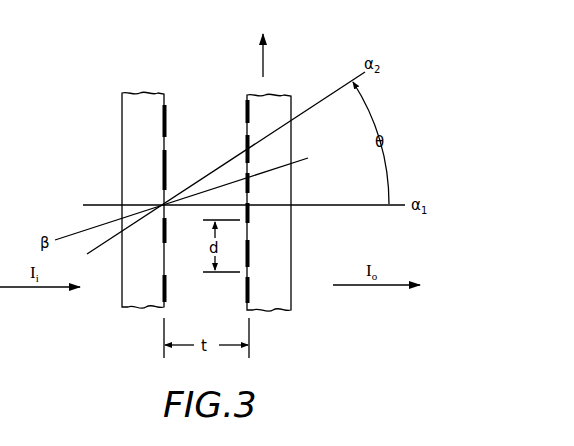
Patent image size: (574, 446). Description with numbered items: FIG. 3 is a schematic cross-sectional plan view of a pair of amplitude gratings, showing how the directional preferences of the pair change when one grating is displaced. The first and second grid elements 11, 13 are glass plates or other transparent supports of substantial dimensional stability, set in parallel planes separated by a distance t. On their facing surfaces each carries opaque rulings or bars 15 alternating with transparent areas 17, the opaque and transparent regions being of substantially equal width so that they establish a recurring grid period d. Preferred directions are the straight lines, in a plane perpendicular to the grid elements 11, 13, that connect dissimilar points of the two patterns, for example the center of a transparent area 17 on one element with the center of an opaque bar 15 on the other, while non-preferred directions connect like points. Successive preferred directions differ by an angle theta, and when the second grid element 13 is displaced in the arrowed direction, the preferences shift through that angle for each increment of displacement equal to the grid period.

The first grid element 11 is at (122, 304).
The second grid element 13 is at (293, 293).
The opaque rulings or bars 15 is at (166, 116).
The transparent areas 17 is at (247, 123).